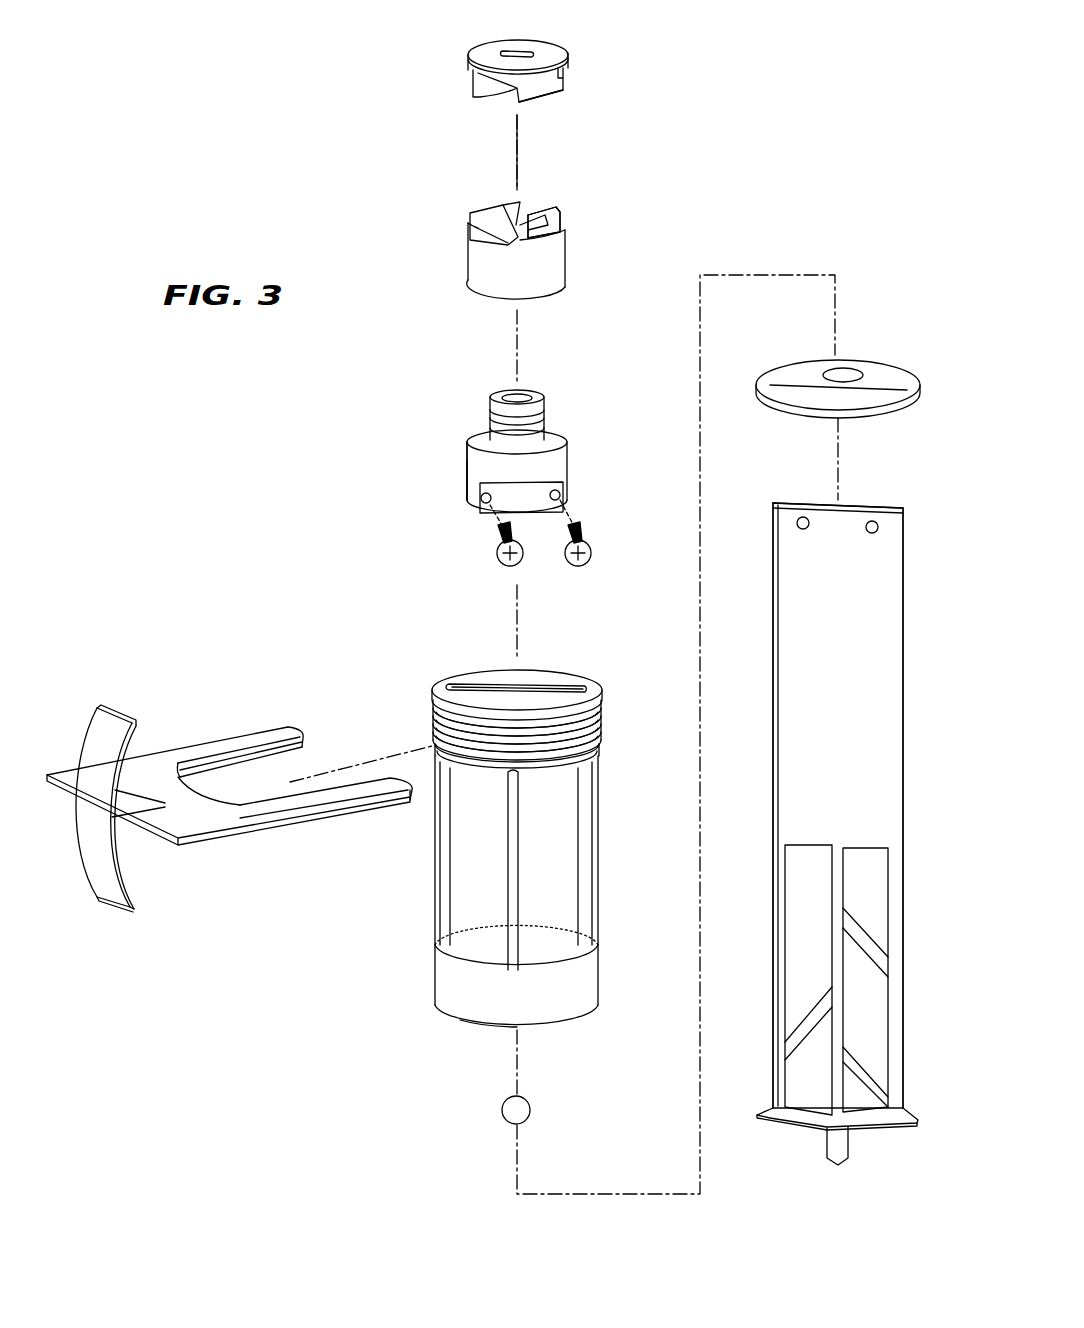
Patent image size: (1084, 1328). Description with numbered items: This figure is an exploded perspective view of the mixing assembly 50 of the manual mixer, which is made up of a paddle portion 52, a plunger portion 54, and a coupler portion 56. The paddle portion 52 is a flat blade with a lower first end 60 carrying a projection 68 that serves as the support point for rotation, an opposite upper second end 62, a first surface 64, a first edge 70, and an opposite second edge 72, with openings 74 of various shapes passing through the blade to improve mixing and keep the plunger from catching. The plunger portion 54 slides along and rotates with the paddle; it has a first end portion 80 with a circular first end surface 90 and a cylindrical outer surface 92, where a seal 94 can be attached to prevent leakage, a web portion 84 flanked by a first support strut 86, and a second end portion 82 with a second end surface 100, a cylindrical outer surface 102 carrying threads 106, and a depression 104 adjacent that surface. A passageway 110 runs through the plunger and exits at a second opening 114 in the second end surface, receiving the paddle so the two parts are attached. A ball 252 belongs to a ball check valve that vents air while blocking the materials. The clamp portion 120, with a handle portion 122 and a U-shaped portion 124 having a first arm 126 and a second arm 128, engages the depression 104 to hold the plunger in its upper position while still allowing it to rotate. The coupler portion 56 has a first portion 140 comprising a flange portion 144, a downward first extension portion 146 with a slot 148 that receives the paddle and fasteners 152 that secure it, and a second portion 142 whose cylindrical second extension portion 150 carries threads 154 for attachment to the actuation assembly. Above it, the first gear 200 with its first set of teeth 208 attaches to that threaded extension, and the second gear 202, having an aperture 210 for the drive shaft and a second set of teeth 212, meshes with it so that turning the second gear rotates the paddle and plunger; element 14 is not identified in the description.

The plate 14 is at (565, 487).
The mixing assembly 50 is at (416, 506).
The paddle portion 52 is at (844, 850).
The plunger portion 54 is at (523, 848).
The coupler portion 56 is at (534, 483).
The lower first end 60 is at (872, 1128).
The upper second end 62 is at (872, 512).
The first surface 64 is at (883, 790).
The projection 68 is at (838, 1166).
The first edge 70 is at (905, 648).
The second edge 72 is at (772, 663).
The openings 74 is at (890, 900).
The first end portion 80 is at (540, 1000).
The second end portion 82 is at (588, 683).
The web portion 84 is at (598, 905).
The first support strut 86 is at (512, 918).
The first end surface 90 is at (490, 1025).
The outer surface 92 is at (445, 988).
The seal 94 is at (905, 382).
The second end surface 100 is at (519, 685).
The outer surface 102 is at (600, 715).
The depression 104 is at (590, 750).
The threads 106 is at (432, 706).
The passageway 110 is at (460, 668).
The second opening 114 is at (487, 676).
The clamp portion 120 is at (234, 817).
The handle portion 122 is at (95, 748).
The U-shaped portion 124 is at (247, 812).
The first arm 126 is at (323, 800).
The second arm 128 is at (235, 745).
The first portion 140 is at (534, 483).
The second portion 142 is at (497, 438).
The flange portion 144 is at (478, 457).
The first extension portion 146 is at (565, 497).
The slot 148 is at (468, 488).
The second extension portion 150 is at (538, 432).
The fasteners 152 is at (522, 552).
The threads 154 is at (548, 403).
The first gear 200 is at (565, 258).
The second gear 202 is at (552, 53).
The first set of teeth 208 is at (545, 218).
The aperture 210 is at (518, 50).
The second set of teeth 212 is at (557, 98).
The ball 252 is at (525, 1110).